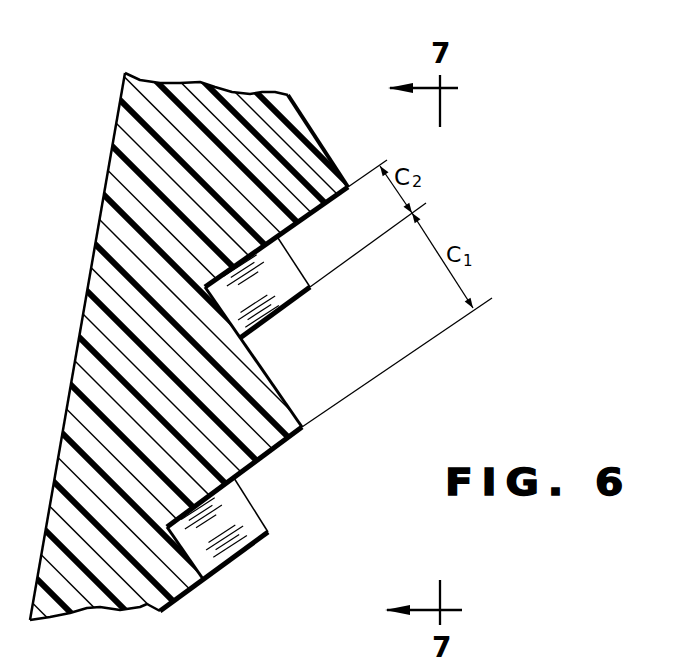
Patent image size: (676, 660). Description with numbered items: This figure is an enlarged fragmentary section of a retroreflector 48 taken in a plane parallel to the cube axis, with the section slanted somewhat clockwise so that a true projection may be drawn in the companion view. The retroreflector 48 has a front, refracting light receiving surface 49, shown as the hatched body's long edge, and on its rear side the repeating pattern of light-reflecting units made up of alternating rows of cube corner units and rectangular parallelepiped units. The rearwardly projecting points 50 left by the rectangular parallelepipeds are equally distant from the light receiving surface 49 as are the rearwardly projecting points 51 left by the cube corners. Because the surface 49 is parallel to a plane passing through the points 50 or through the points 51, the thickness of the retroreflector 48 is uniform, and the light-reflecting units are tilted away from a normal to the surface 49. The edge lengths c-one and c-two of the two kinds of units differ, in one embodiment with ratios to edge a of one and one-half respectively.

The retroreflector 48 is at (195, 88).
The light receiving surface 49 is at (97, 216).
The rearwardly projecting points left by the rectangular parallelepipeds 50 is at (348, 188).
The rearwardly projecting points left by the cube corners 51 is at (310, 288).